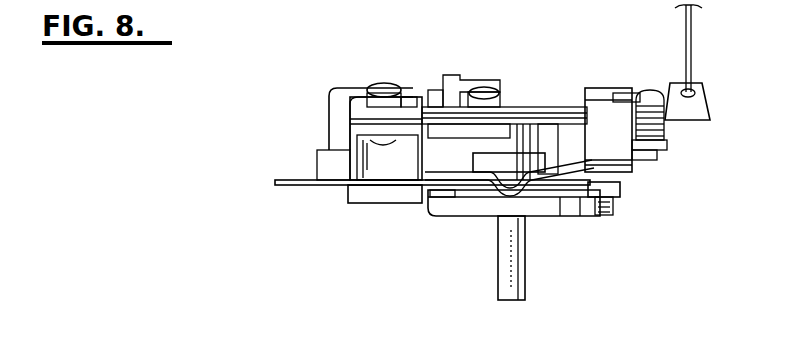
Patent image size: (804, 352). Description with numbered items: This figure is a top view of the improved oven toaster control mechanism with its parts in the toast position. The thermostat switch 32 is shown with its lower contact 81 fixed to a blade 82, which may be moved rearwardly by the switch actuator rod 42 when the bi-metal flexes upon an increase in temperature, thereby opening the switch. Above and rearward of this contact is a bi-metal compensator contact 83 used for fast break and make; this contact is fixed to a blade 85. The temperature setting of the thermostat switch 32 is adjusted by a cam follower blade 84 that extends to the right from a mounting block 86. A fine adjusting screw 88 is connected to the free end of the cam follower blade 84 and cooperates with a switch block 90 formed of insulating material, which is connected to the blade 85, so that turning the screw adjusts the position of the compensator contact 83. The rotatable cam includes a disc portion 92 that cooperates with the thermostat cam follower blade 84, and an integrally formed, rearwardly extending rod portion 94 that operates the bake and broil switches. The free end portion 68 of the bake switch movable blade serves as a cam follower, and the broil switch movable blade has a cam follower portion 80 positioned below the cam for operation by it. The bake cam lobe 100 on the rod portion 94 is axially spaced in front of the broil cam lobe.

The thermostat switch 32 is at (630, 73).
The switch actuator rod 42 is at (693, 37).
The free end portion 68 is at (494, 160).
The cam follower portion 80 is at (546, 133).
The lower contact 81 is at (658, 140).
The blade 82 is at (640, 150).
The bi-metal compensator contact 83 is at (653, 97).
The cam follower blade 84 is at (403, 182).
The blade 85 is at (568, 95).
The mounting block 86 is at (348, 192).
The fine adjusting screw 88 is at (613, 218).
The switch block 90 is at (620, 167).
The disc portion 92 is at (572, 214).
The rod portion 94 is at (513, 130).
The bake cam lobe 100 is at (492, 200).